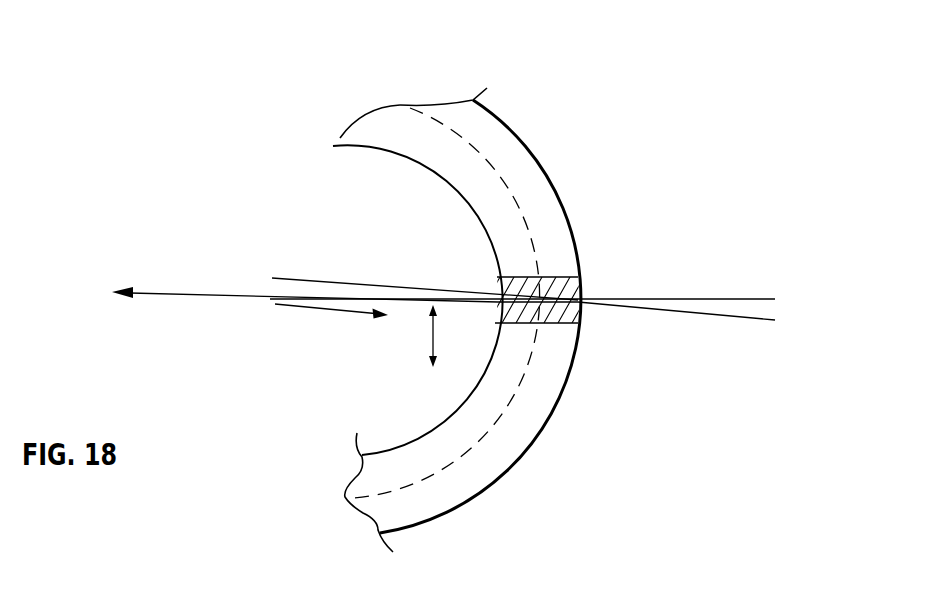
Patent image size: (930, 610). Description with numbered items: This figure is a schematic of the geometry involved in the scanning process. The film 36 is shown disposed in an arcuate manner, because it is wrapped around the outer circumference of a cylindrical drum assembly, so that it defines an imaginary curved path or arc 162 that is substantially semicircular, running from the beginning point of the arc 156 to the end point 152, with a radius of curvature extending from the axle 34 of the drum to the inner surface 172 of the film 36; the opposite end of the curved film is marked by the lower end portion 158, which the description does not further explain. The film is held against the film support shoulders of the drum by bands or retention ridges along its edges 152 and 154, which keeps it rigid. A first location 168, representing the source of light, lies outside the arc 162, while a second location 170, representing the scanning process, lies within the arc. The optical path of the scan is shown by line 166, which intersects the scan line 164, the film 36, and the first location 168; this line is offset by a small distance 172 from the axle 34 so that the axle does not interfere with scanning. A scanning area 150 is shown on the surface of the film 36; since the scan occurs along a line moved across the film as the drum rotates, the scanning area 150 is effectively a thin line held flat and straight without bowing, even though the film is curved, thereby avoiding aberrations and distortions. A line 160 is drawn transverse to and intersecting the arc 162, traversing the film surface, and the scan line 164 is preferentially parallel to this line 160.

The axle 34 is at (427, 380).
The film 36 is at (490, 134).
The scanning area 150 is at (560, 277).
The film edge 152 is at (452, 193).
The film edge 154 is at (543, 172).
The beginning point of the arc 156 is at (398, 103).
The lower lens edge 158 is at (345, 497).
The transverse line 160 is at (707, 316).
The arc 162 is at (533, 340).
The scan line 164 is at (297, 308).
The optical path 166 is at (393, 306).
The first location 168 is at (746, 298).
The second location 170 is at (247, 308).
The offset distance 172 is at (440, 333).